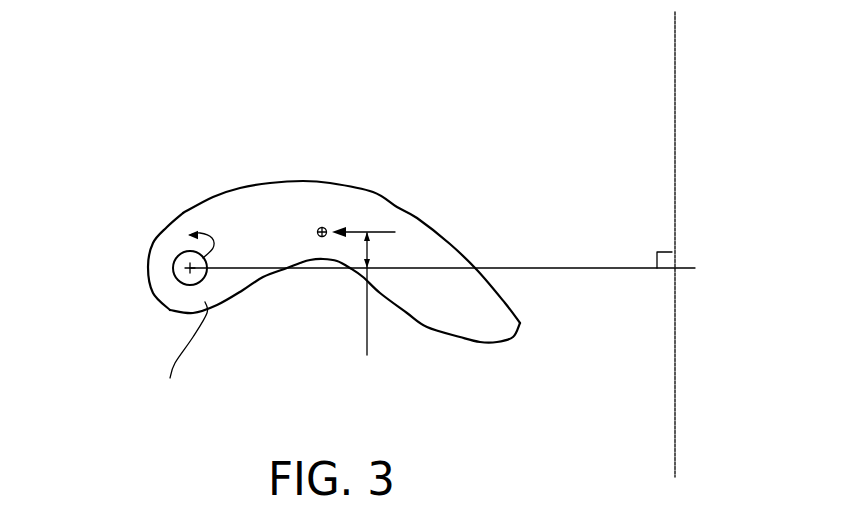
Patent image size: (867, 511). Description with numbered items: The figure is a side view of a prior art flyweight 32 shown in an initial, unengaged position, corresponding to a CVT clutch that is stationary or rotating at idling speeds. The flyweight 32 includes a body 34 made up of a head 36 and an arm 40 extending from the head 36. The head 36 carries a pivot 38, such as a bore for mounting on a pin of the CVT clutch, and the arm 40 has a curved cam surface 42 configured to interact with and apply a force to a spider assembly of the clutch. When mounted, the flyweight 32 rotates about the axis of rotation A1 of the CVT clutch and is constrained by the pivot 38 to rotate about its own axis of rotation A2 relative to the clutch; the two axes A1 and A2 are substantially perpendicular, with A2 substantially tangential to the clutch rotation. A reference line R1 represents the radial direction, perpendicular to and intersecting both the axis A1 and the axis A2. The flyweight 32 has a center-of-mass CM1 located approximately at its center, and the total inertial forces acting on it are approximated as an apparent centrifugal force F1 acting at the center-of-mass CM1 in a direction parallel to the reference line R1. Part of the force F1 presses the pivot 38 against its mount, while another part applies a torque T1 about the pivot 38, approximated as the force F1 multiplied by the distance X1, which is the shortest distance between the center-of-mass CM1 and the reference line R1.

The flyweight 32 is at (132, 115).
The body 34 is at (280, 213).
The head 36 is at (145, 297).
The pivot 38 is at (178, 252).
The arm 40 is at (503, 352).
The cam surface 42 is at (375, 190).
The axis of rotation of the CVT clutch A1 is at (675, 128).
The axis of rotation of the flyweight A2 is at (172, 306).
The reference line R1 is at (553, 268).
The apparent centrifugal force F1 is at (382, 232).
The shortest distance between the center-of-mass and the reference line X1 is at (375, 314).
The center-of-mass CM1 is at (318, 235).
The torque T1 is at (179, 360).